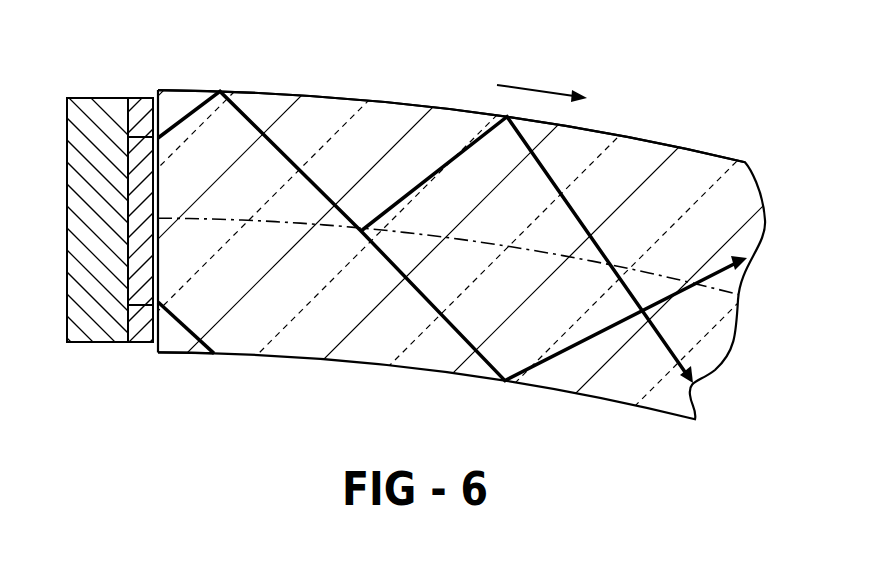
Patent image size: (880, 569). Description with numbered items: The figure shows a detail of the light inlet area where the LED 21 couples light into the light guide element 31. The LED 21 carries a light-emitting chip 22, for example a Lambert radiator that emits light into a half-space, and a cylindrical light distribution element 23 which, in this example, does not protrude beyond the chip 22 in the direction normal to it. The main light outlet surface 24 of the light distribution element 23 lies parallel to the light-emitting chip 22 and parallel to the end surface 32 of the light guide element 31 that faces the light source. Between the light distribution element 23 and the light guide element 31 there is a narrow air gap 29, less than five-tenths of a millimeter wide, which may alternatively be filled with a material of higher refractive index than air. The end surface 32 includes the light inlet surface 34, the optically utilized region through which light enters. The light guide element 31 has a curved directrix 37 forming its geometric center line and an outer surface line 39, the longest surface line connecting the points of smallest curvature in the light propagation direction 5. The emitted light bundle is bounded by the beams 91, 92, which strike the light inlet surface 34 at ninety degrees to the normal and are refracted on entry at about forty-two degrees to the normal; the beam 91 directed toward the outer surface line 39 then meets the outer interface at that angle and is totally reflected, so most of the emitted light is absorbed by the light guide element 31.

The light propagation direction 5 is at (528, 88).
The LED 21 is at (84, 115).
The light-emitting chip 22 is at (138, 150).
The light distribution element 23 is at (148, 107).
The main light outlet surface 24 is at (155, 115).
The air gap 29 is at (153, 70).
The light guide element 31 is at (335, 117).
The end surface 32 is at (157, 348).
The light inlet surface 34 is at (157, 285).
The directrix 37 is at (363, 229).
The outer surface line 39 is at (381, 99).
The light beam 91 is at (288, 150).
The light beam 92 is at (186, 330).